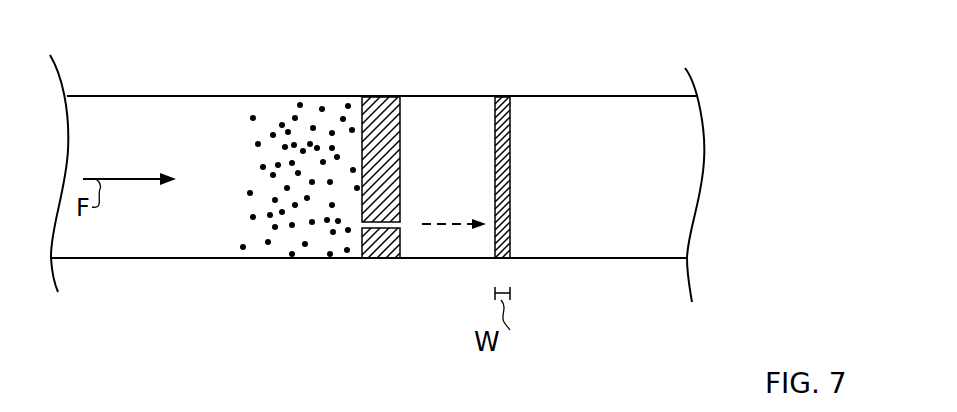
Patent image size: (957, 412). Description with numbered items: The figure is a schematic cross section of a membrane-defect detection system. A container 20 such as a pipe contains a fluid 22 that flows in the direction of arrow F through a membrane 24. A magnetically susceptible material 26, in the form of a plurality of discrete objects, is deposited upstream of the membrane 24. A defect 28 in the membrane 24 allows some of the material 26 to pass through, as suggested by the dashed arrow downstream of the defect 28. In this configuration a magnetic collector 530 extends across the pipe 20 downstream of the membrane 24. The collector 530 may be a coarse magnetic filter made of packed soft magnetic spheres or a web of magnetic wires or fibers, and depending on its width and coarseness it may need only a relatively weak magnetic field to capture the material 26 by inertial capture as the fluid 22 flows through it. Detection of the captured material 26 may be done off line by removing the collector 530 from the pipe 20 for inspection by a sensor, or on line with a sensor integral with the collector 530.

The container 20 is at (148, 96).
The fluid 22 is at (166, 139).
The membrane 24 is at (386, 97).
The magnetically susceptible material 26 is at (278, 263).
The defect 28 is at (400, 222).
The magnetic collector 530 is at (511, 100).